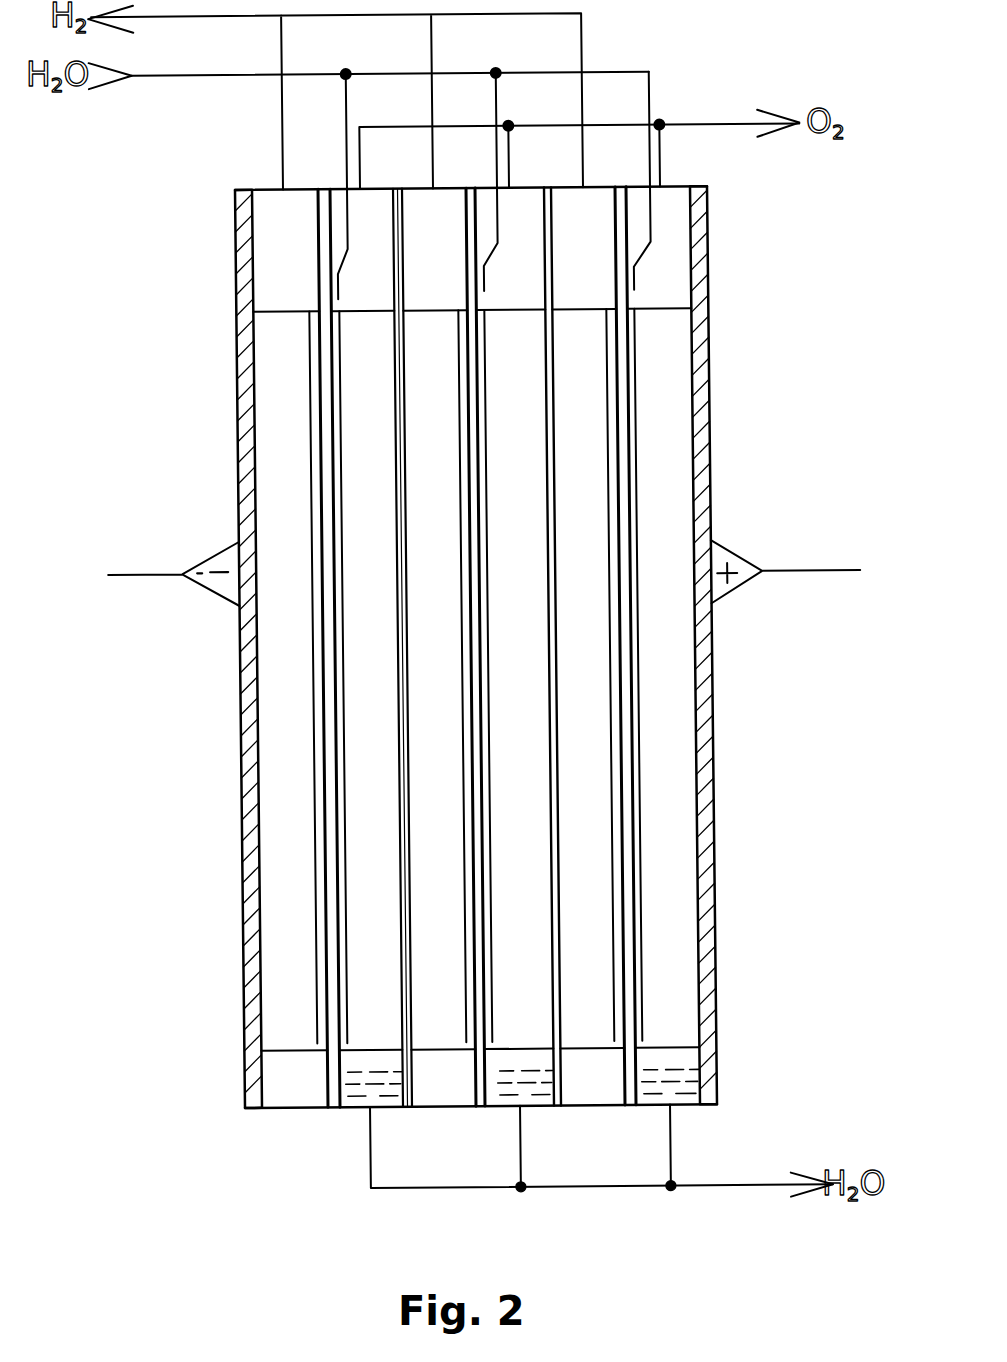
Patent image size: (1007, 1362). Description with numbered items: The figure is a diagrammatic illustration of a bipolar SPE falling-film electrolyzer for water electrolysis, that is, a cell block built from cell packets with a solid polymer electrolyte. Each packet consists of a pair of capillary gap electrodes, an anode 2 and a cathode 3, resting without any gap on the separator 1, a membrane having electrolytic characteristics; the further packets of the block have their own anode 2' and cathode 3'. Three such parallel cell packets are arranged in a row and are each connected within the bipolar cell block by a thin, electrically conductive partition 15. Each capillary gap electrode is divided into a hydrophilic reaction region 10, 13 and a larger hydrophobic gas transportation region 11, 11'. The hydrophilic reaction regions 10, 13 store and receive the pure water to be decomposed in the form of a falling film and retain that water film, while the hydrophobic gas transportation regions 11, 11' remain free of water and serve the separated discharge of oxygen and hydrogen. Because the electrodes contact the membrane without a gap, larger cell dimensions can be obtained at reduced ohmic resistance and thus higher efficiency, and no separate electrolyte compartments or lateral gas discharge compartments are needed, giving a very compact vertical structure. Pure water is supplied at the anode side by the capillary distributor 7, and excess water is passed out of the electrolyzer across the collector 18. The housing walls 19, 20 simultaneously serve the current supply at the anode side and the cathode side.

The separator 1 is at (480, 987).
The anode 2 is at (722, 646).
The anode 2' is at (659, 675).
The cathode 3 is at (221, 681).
The cathode 3' is at (693, 679).
The capillary distributor 7 is at (633, 272).
The hydrophilic reaction region 10 is at (322, 825).
The hydrophobic gas transportation region 11 is at (664, 703).
The hydrophobic gas transportation region 11' is at (744, 701).
The hydrophilic reaction region 13 is at (333, 420).
The partition 15 is at (555, 663).
The collector 18 is at (520, 1152).
The housing wall 19 is at (698, 635).
The housing wall 20 is at (243, 637).